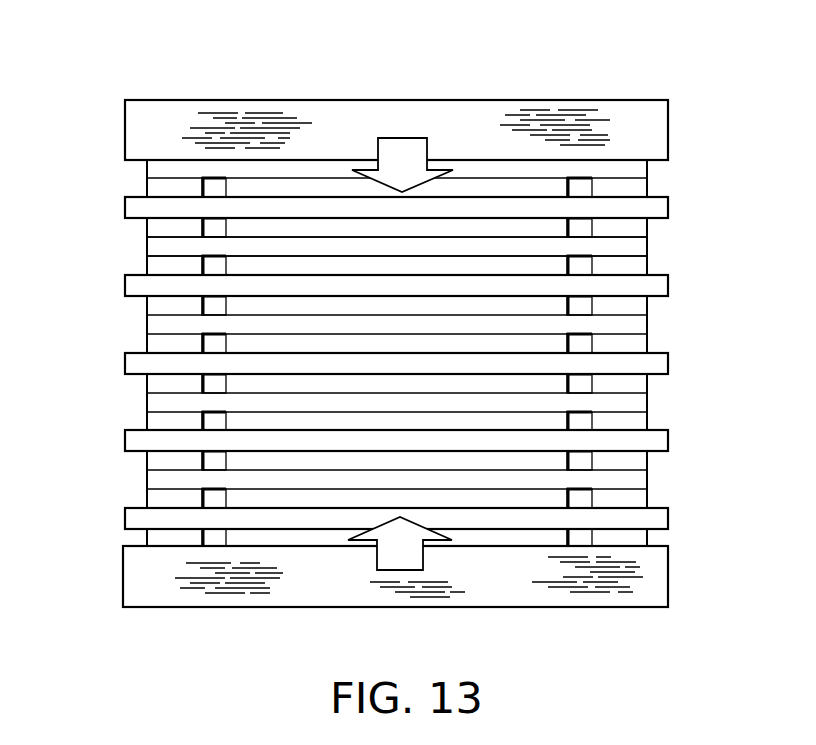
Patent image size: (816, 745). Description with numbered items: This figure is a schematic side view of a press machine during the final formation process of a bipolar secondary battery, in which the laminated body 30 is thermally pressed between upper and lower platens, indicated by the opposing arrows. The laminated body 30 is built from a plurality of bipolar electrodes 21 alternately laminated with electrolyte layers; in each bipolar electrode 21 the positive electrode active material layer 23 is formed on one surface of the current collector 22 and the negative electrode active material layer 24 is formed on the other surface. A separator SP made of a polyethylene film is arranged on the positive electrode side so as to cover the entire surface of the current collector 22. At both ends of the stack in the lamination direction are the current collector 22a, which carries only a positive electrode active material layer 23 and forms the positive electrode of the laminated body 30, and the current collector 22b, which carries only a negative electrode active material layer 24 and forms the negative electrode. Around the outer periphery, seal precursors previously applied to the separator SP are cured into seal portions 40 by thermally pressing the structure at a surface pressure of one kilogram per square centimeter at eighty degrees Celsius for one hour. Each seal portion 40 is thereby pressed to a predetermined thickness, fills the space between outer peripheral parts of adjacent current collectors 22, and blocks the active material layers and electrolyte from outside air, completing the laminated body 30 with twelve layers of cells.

The bipolar electrode 21 is at (588, 47).
The current collector 22 is at (502, 262).
The positive electrode active material layer 23 is at (542, 247).
The negative electrode active material layer 24 is at (465, 227).
The current collector 22a is at (312, 168).
The current collector 22b is at (310, 535).
The laminated body 30 is at (128, 254).
The seal portion 40 is at (640, 223).
The separator SP is at (657, 205).